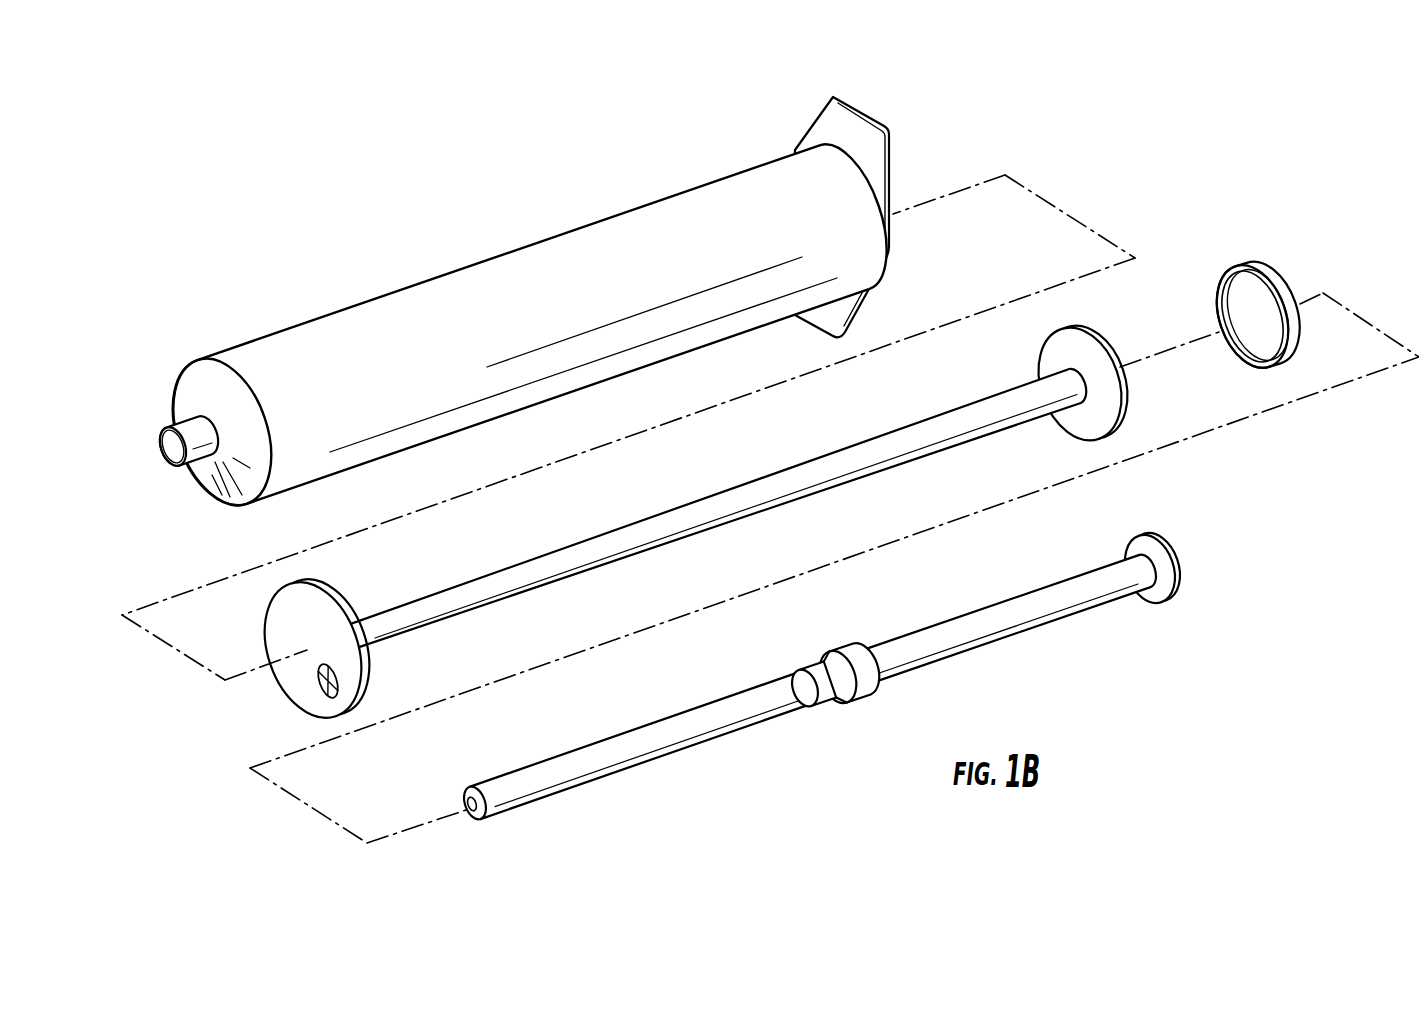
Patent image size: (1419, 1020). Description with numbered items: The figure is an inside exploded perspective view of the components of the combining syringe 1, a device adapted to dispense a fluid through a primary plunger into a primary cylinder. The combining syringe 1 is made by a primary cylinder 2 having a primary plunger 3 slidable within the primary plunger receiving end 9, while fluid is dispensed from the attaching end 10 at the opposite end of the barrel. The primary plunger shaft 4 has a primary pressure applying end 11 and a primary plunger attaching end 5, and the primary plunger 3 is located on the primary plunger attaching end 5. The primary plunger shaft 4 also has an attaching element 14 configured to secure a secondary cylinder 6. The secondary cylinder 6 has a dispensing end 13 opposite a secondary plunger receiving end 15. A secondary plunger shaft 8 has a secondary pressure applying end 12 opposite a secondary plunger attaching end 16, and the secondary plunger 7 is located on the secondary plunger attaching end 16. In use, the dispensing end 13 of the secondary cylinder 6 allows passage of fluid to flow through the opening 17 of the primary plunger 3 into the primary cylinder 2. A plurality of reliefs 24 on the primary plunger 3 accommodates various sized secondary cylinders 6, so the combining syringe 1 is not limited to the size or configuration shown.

The combining syringe 1 is at (1068, 153).
The primary cylinder 2 is at (459, 267).
The primary plunger 3 is at (288, 682).
The primary plunger shaft 4 is at (889, 436).
The primary plunger attaching end 5 is at (372, 620).
The secondary cylinder 6 is at (683, 708).
The secondary plunger 7 is at (796, 689).
The secondary plunger shaft 8 is at (1091, 596).
The primary plunger receiving end 9 is at (893, 170).
The attaching end 10 is at (202, 384).
The primary pressure applying end 11 is at (1105, 347).
The secondary pressure applying end 12 is at (1174, 557).
The dispensing end 13 is at (467, 813).
The attaching element 14 is at (1275, 274).
The secondary plunger receiving end 15 is at (870, 698).
The secondary plunger attaching end 16 is at (834, 683).
The opening 17 is at (330, 674).
The plurality of reliefs 24 is at (341, 680).